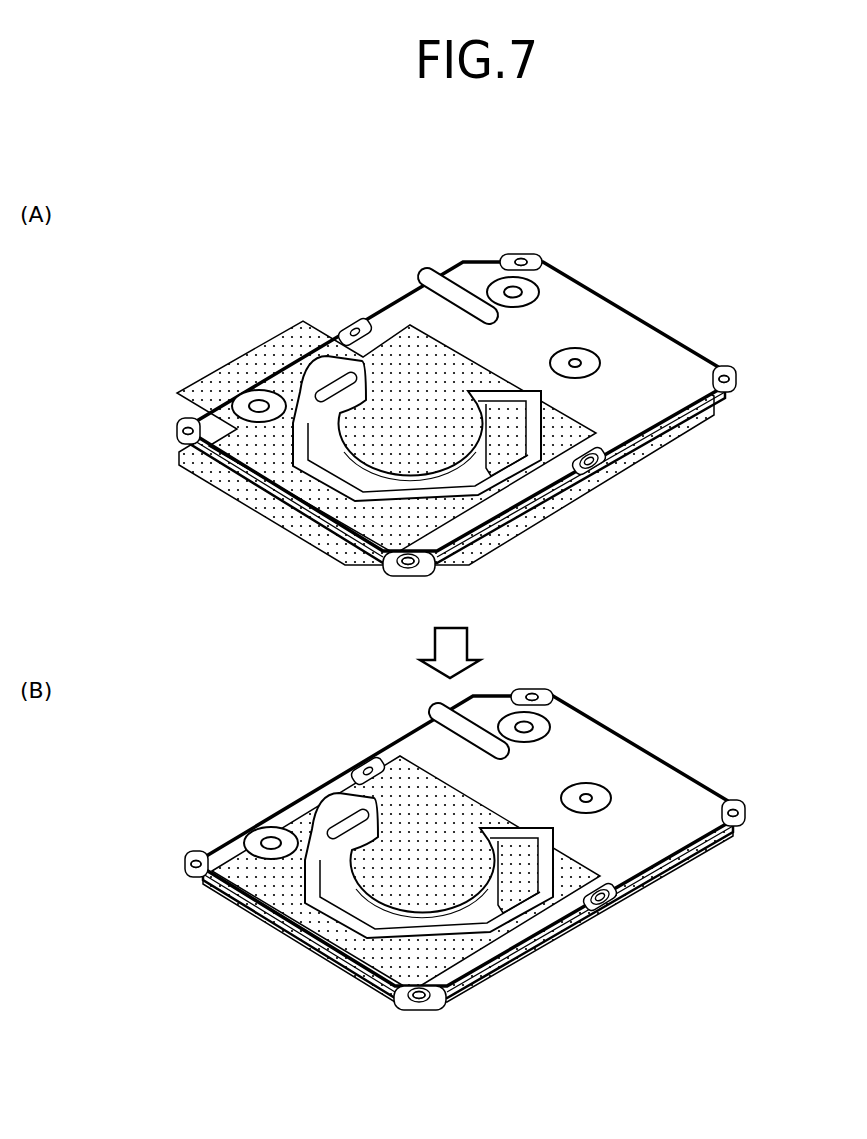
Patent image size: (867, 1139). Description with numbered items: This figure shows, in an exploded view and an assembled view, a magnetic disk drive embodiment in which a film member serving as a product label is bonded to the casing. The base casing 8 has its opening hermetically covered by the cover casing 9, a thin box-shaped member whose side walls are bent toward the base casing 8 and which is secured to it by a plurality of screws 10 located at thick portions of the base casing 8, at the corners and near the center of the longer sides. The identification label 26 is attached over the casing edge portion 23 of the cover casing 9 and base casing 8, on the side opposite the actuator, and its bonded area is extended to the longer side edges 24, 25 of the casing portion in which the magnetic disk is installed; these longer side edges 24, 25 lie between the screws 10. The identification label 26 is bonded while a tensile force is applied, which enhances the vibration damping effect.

The base casing 8 is at (714, 410).
The cover casing 9 is at (615, 305).
The screws 10 is at (519, 258).
The casing edge portion 23 is at (178, 448).
The longer side edge 24 is at (350, 323).
The longer side edge 25 is at (445, 563).
The identification label 26 is at (257, 513).